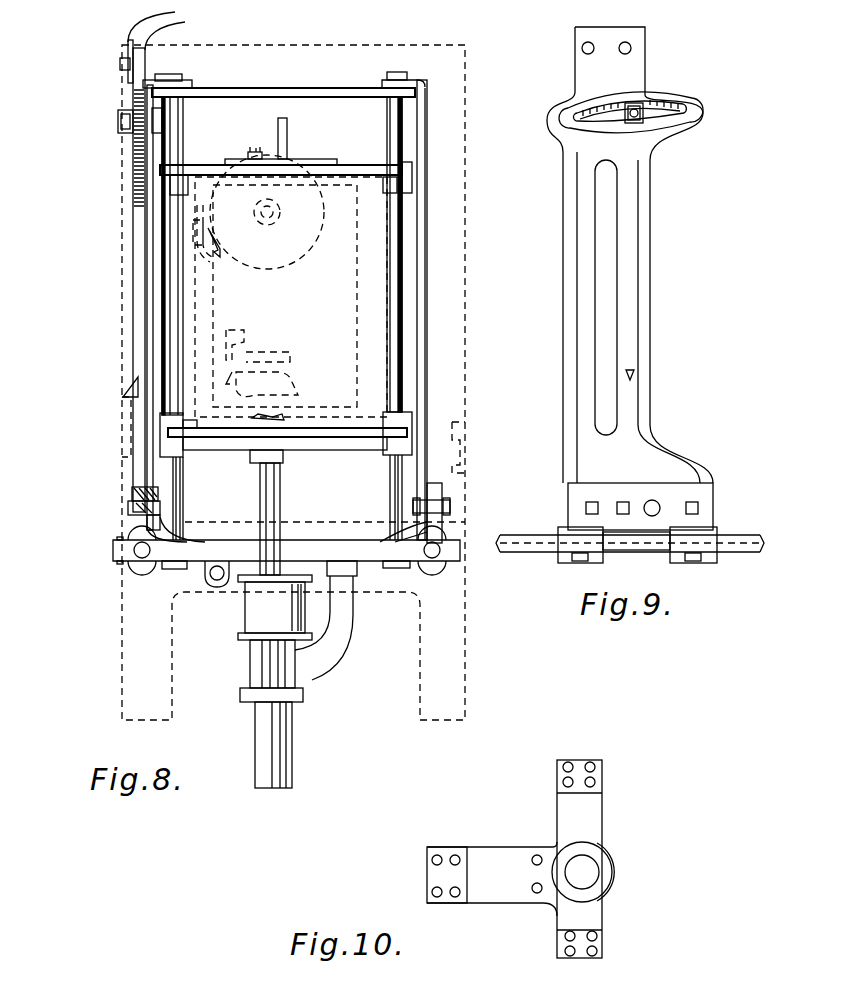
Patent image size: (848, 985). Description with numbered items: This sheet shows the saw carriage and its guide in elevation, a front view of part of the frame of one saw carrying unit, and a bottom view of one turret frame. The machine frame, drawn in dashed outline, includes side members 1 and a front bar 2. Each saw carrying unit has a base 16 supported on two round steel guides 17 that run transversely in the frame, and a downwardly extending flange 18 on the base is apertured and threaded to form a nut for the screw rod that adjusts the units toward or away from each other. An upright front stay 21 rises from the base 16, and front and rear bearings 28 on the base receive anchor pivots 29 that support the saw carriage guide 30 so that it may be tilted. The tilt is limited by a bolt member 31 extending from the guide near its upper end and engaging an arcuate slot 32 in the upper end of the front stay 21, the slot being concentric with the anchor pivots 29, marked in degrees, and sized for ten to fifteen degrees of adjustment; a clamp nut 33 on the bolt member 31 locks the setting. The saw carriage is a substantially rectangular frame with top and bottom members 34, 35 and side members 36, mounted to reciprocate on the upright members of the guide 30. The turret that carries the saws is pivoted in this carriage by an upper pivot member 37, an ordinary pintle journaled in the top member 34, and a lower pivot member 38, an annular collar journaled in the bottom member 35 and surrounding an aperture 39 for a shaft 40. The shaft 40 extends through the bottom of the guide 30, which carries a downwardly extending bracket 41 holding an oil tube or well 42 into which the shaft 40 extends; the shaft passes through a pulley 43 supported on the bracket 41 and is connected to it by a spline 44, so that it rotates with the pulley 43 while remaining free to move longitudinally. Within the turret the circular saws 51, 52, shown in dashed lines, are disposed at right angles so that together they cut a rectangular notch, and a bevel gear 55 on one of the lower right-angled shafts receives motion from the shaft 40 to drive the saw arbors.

In FIG. 8, the side members 1 is at (127, 612).
In FIG. 8, the front bar 2 is at (123, 433).
In FIG. 8, the base 16 is at (122, 540).
In FIG. 9, the base 16 is at (707, 508).
In FIG. 9, the guides 17 is at (548, 553).
In FIG. 8, the downwardly extending flange 18 is at (203, 578).
In FIG. 8, the upright front stay 21 is at (133, 202).
In FIG. 9, the upright front stay 21 is at (628, 203).
In FIG. 8, the front and rear bearings 28 is at (138, 528).
In FIG. 9, the front and rear bearings 28 is at (625, 490).
In FIG. 8, the anchor pivots 29 is at (128, 503).
In FIG. 9, the anchor pivots 29 is at (653, 500).
In FIG. 8, the saw carriage guide 30 is at (147, 242).
In FIG. 8, the bolt member 31 is at (120, 120).
In FIG. 9, the bolt member 31 is at (632, 108).
In FIG. 9, the arcuate slot 32 is at (660, 118).
In FIG. 8, the clamp nut 33 is at (121, 125).
In FIG. 9, the clamp nut 33 is at (642, 123).
In FIG. 8, the top member 34 is at (312, 163).
In FIG. 8, the bottom member 35 is at (343, 440).
In FIG. 8, the side members 36 is at (175, 282).
In FIG. 8, the pivot member 37 is at (258, 152).
In FIG. 10, the pivot member 38 is at (567, 857).
In FIG. 10, the bore 39 is at (586, 872).
In FIG. 8, the shaft 40 is at (282, 511).
In FIG. 8, the bracket 41 is at (342, 622).
In FIG. 8, the oil tube or well 42 is at (288, 733).
In FIG. 8, the pulley 43 is at (253, 615).
In FIG. 8, the spline 44 is at (262, 513).
In FIG. 8, the circular saw 51 is at (203, 250).
In FIG. 8, the circular saw 52 is at (297, 255).
In FIG. 8, the bevel gear 55 is at (240, 348).